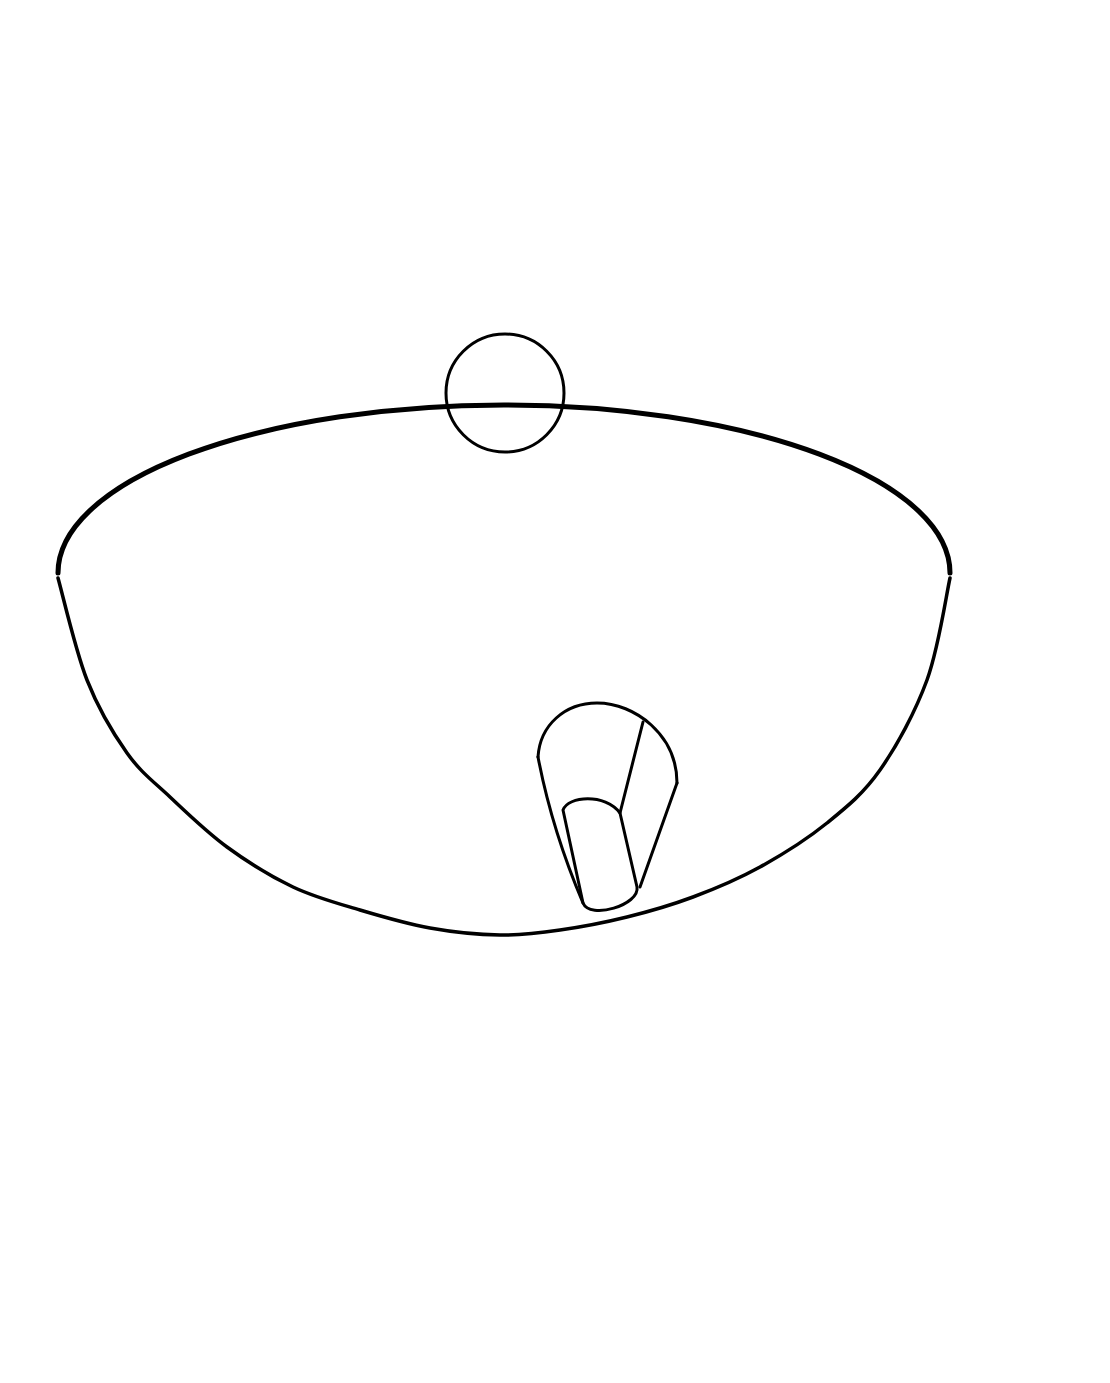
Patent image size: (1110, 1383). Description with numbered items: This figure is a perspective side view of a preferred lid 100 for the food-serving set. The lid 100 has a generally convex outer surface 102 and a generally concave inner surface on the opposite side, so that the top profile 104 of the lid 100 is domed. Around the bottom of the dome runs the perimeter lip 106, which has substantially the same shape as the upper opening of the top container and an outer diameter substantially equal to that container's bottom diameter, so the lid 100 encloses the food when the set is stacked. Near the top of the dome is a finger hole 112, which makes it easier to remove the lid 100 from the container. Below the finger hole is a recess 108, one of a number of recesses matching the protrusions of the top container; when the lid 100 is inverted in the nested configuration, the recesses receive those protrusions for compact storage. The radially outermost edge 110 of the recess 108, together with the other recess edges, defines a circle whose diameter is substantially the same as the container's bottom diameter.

The lid 100 is at (827, 50).
The outer surface 102 is at (324, 581).
The top profile 104 is at (229, 425).
The perimeter lip 106 is at (338, 927).
The recess 108 is at (620, 872).
The radially outermost edge 110 is at (596, 928).
The finger hole 112 is at (484, 312).